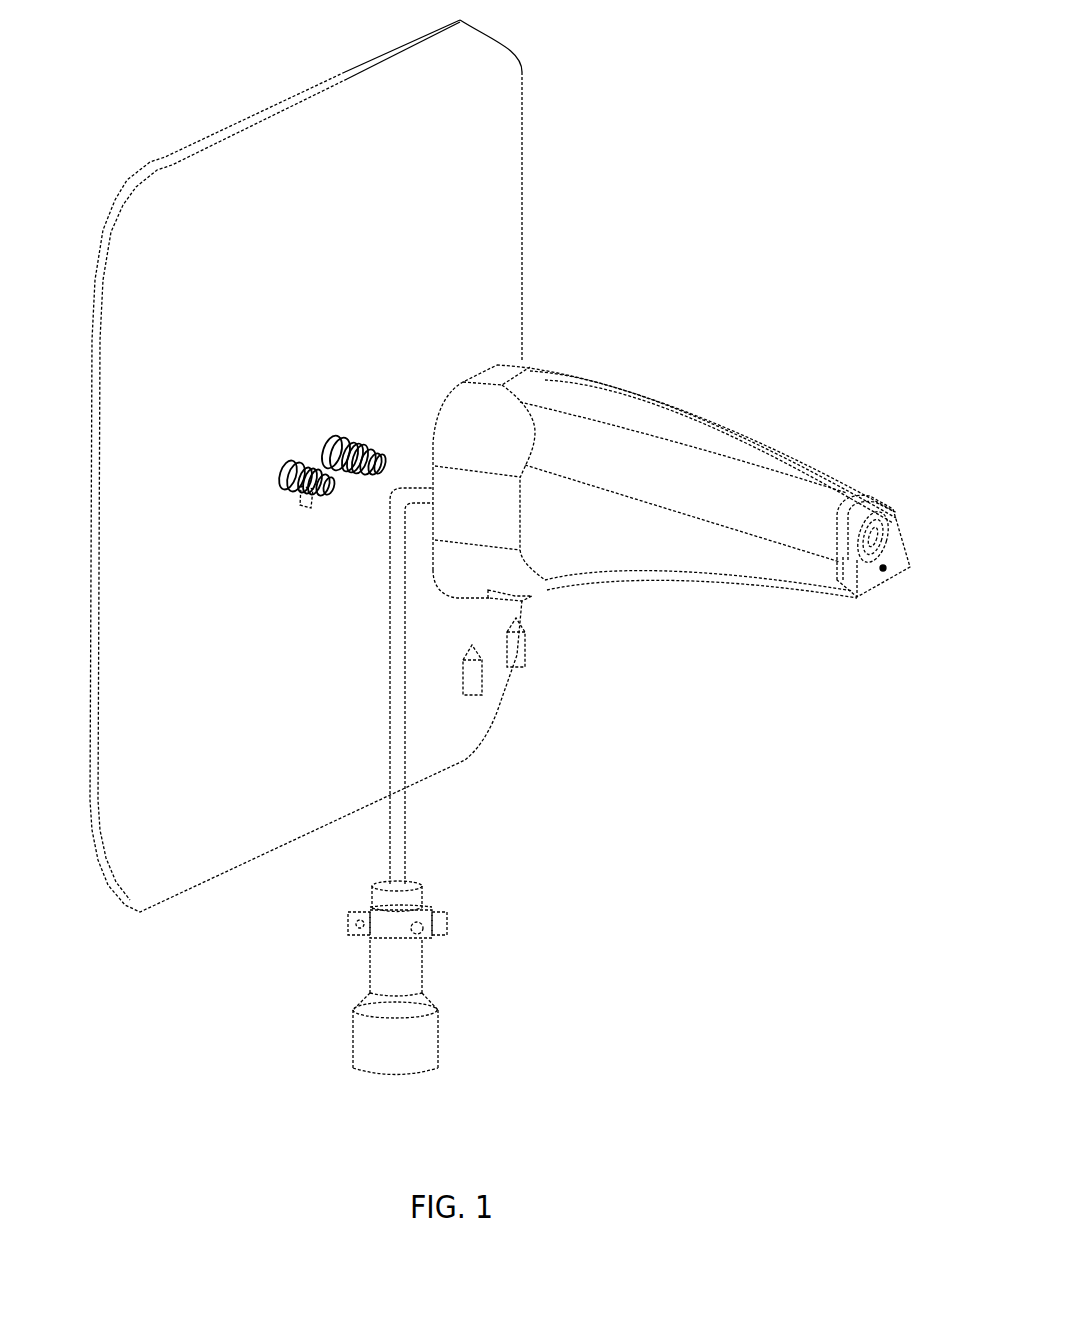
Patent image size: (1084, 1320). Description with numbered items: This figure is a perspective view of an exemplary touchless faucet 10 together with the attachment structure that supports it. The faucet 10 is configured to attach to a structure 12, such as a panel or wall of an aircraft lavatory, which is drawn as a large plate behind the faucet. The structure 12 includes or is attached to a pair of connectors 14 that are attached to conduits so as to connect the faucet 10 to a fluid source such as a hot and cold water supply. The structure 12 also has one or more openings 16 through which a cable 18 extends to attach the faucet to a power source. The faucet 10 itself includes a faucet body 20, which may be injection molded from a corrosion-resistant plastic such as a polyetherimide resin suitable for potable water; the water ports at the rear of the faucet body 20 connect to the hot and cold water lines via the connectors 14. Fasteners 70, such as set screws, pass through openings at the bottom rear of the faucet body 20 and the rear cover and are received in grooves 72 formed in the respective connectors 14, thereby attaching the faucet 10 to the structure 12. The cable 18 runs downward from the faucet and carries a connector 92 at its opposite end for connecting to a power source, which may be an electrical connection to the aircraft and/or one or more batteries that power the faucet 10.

The faucet 10 is at (829, 190).
The structure 12 is at (522, 202).
The connectors 14 is at (377, 447).
The openings 16 is at (308, 508).
The cable 18 is at (397, 807).
The faucet body 20 is at (772, 458).
The fasteners 70 is at (482, 678).
The grooves 72 is at (290, 488).
The connector 92 is at (435, 1013).